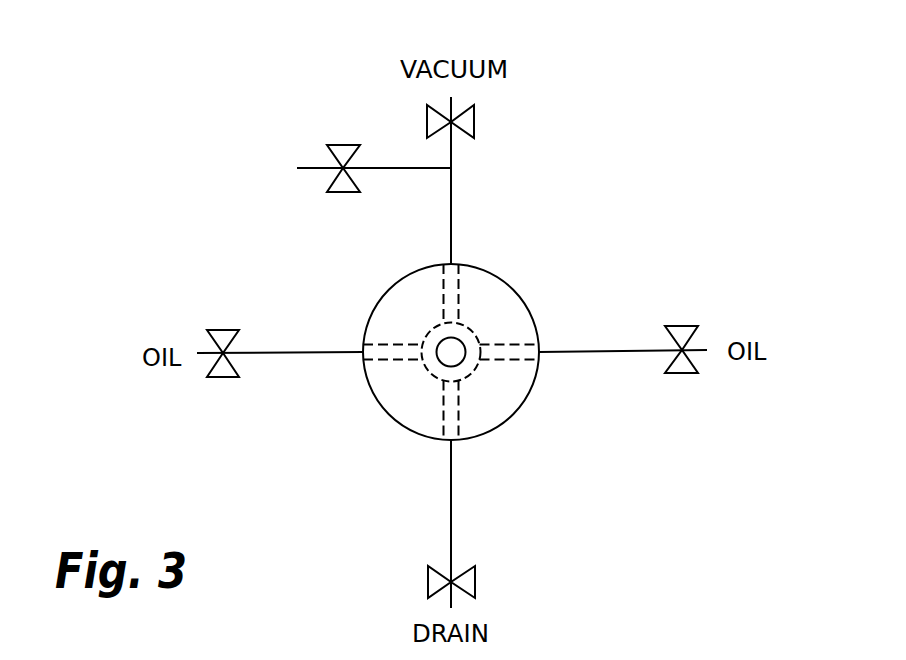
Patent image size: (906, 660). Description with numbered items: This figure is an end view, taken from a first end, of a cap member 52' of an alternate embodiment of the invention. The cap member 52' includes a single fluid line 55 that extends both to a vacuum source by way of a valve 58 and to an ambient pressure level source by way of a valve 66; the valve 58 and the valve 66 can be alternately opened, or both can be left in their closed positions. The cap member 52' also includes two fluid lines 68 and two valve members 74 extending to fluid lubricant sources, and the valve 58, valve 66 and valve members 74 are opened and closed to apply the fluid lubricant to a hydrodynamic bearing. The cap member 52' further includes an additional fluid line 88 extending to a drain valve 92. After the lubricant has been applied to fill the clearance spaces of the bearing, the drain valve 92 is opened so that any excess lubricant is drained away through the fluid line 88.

The cap member 52' is at (530, 294).
The single fluid line 55 is at (449, 227).
The valve 58 is at (474, 118).
The valve 66 is at (337, 193).
The fluid lines 68 is at (327, 352).
The valve members 74 is at (233, 378).
The additional fluid line 88 is at (452, 488).
The drain valve 92 is at (427, 575).